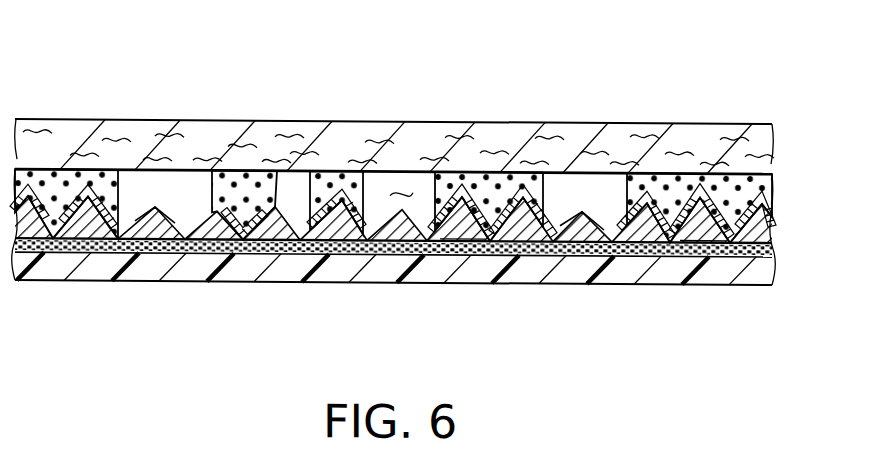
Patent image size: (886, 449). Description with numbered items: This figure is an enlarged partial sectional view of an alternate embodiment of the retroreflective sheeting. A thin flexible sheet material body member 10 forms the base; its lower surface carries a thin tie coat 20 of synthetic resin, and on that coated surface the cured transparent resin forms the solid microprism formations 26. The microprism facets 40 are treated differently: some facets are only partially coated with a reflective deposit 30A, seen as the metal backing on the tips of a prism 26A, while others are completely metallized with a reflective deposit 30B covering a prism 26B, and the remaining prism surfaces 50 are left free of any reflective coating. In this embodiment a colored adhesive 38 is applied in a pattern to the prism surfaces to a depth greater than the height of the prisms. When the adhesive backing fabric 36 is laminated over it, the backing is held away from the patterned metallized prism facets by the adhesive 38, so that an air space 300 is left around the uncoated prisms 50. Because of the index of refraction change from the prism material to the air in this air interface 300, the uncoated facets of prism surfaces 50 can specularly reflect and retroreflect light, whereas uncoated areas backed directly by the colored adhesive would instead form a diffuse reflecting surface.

The body member 10 is at (773, 270).
The tie coat 20 is at (773, 247).
The microprism formations 26 is at (773, 225).
The prism with partially metallized tips 26A is at (80, 113).
The completely metallized prism 26B is at (702, 233).
The partial reflective deposit 30A is at (46, 194).
The complete reflective deposit 30B is at (476, 193).
The backing fabric 36 is at (773, 143).
The colored adhesive 38 is at (773, 187).
The microprism facets 40 is at (615, 226).
The uncoated prism surfaces 50 is at (160, 209).
The air space 300 is at (403, 186).